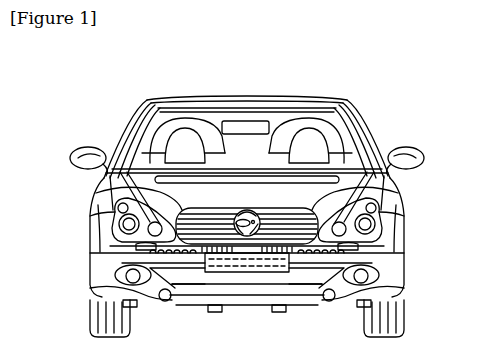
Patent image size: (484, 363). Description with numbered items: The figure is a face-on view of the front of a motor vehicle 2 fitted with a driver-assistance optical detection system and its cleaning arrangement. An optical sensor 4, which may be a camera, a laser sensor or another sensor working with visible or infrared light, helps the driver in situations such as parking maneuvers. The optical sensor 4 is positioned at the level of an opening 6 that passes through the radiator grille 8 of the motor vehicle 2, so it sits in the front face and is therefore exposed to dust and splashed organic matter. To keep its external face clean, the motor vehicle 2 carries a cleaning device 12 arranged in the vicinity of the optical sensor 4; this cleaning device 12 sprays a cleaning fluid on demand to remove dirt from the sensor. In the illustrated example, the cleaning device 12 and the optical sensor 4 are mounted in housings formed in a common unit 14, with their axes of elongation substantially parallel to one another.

The motor vehicle 2 is at (108, 126).
The optical sensor 4 is at (250, 235).
The opening 6 is at (260, 213).
The radiator grille 8 is at (125, 203).
The cleaning device 12 is at (234, 222).
The common unit 14 is at (250, 212).